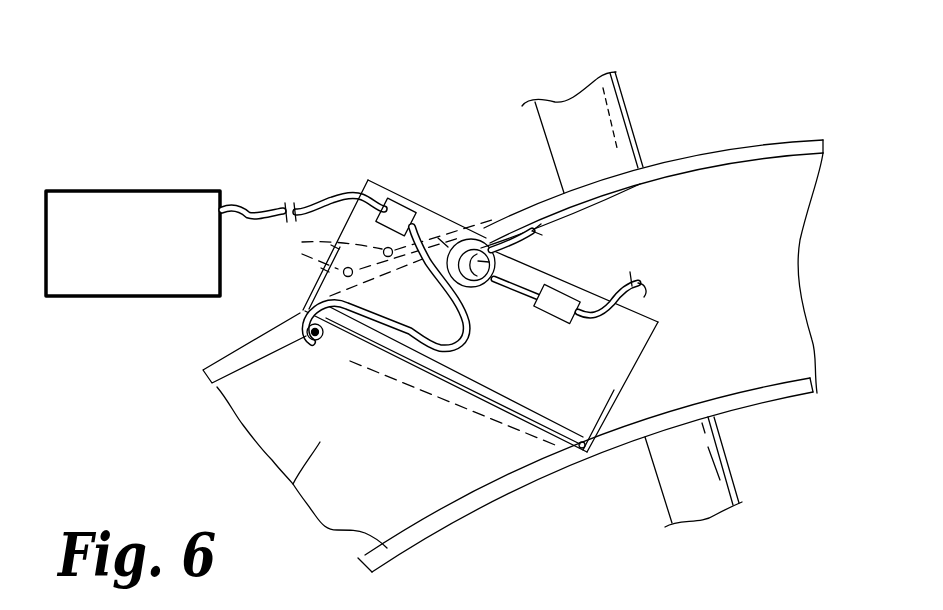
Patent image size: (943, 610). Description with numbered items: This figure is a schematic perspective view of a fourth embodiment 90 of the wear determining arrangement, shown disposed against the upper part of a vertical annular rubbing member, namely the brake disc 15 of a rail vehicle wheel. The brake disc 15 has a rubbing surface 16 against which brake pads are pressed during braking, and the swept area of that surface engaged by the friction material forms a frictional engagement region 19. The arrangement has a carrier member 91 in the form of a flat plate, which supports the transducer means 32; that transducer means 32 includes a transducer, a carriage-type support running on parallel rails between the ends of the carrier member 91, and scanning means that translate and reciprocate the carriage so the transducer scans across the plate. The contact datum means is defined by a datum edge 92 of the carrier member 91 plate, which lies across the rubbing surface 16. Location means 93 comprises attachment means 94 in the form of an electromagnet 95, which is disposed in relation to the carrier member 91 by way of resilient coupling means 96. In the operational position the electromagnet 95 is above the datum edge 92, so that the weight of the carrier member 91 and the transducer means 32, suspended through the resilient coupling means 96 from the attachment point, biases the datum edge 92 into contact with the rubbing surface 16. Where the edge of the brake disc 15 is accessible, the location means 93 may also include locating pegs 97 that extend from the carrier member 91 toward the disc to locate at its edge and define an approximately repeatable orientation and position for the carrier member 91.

The brake disc 15 is at (713, 146).
The rubbing surface 16 is at (203, 370).
The frictional engagement region 19 is at (300, 486).
The transducer means 32 is at (306, 349).
The fourth embodiment of wear determining arrangement 90 is at (402, 183).
The carrier member 91 is at (418, 204).
The datum edge 92 is at (548, 438).
The location means 93 is at (483, 232).
The attachment means 94 is at (497, 285).
The electromagnet 95 is at (506, 250).
The resilient coupling means 96 is at (471, 296).
The locating pegs 97 is at (383, 257).